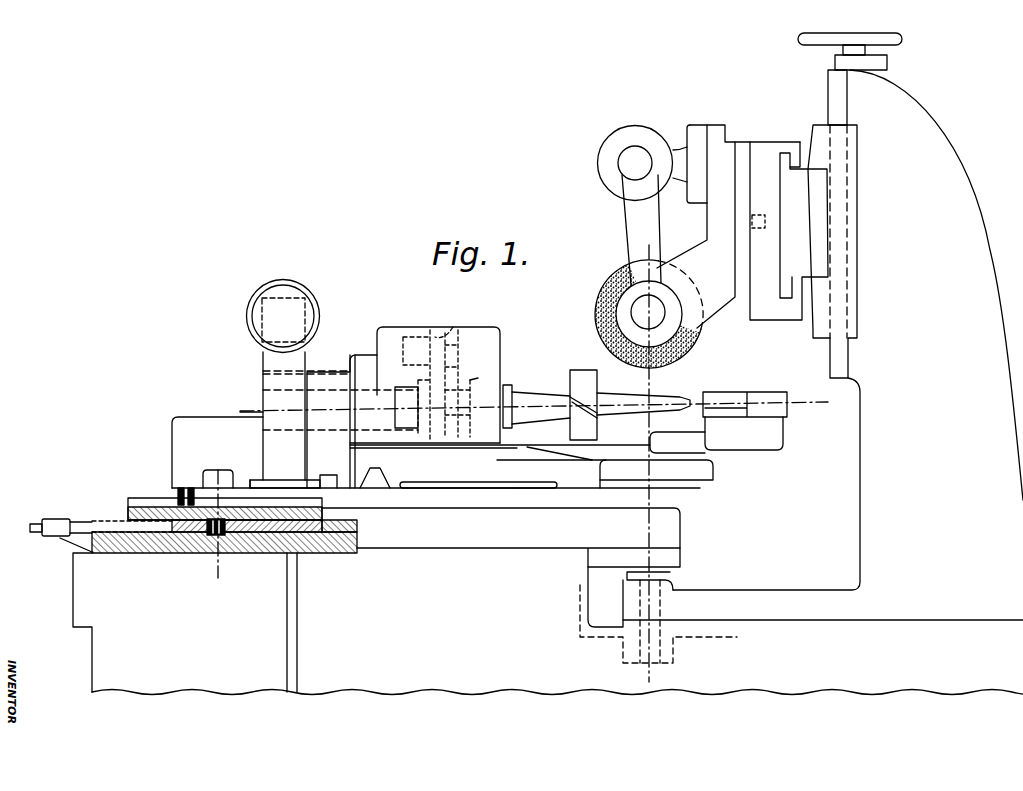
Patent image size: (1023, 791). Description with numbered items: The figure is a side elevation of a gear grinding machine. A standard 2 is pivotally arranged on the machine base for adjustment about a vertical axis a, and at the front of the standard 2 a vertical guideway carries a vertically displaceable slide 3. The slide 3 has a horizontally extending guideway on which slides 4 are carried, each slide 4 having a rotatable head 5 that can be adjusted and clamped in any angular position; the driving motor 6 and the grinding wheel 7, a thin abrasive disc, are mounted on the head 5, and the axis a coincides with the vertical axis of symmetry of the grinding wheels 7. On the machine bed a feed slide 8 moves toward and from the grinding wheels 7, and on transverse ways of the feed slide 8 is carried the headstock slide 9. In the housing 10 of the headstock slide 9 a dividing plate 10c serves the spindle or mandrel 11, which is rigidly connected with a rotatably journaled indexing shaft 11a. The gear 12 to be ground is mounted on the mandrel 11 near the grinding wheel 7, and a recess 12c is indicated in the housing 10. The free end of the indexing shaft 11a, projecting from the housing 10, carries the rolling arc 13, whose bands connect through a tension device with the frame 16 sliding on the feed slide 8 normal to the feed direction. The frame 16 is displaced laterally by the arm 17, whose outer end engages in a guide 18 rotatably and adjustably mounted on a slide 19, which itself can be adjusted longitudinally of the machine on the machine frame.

The standard 2 is at (877, 497).
The vertically displaceable slide 3 is at (826, 336).
The slide 4 is at (773, 310).
The rotatable head 5 is at (722, 134).
The driving motor 6 is at (652, 141).
The grinding wheel 7 is at (616, 281).
The feed slide 8 is at (593, 501).
The headstock slide 9 is at (505, 458).
The housing 10 is at (501, 350).
The dividing plate 10c is at (470, 380).
The mandrel 11 is at (547, 406).
The indexing shaft 11a is at (393, 421).
The gear 12 is at (582, 378).
The housing recess 12c is at (458, 327).
The rolling arc 13 is at (326, 382).
The frame 16 is at (267, 361).
The arm 17 is at (219, 431).
The guide 18 is at (130, 503).
The slide 19 is at (186, 535).
The vertical axis a is at (650, 650).